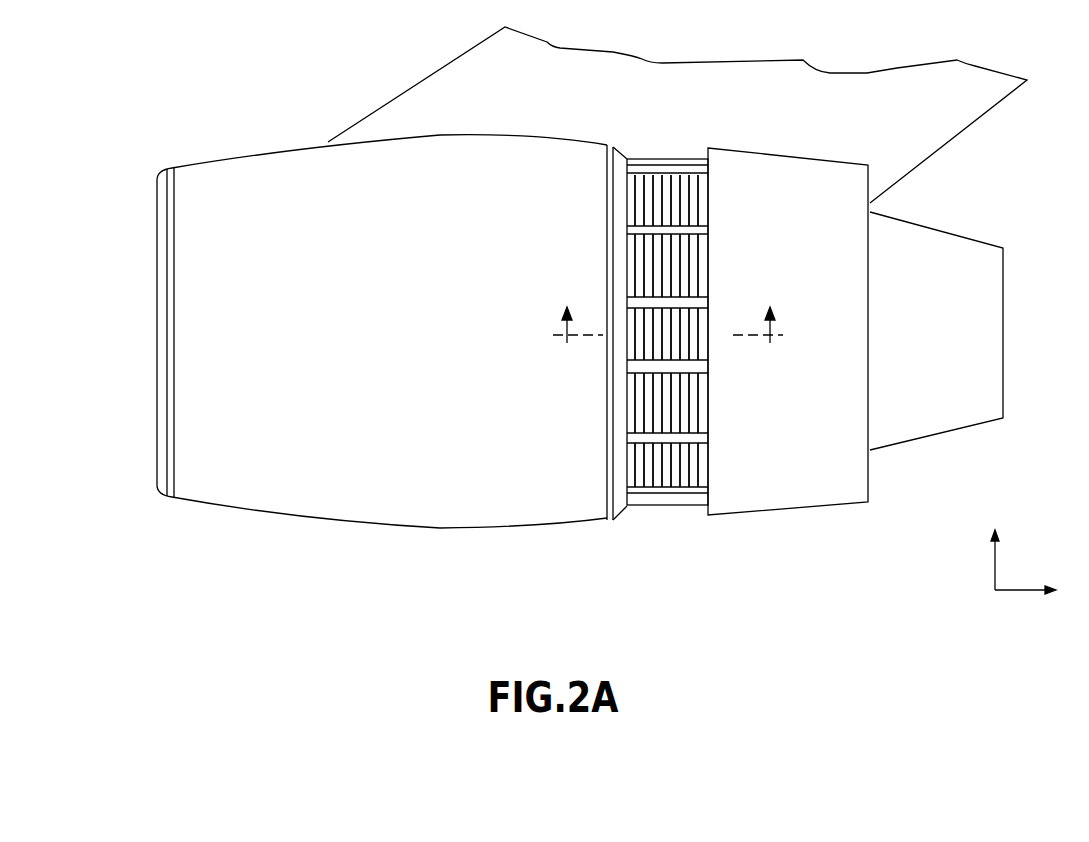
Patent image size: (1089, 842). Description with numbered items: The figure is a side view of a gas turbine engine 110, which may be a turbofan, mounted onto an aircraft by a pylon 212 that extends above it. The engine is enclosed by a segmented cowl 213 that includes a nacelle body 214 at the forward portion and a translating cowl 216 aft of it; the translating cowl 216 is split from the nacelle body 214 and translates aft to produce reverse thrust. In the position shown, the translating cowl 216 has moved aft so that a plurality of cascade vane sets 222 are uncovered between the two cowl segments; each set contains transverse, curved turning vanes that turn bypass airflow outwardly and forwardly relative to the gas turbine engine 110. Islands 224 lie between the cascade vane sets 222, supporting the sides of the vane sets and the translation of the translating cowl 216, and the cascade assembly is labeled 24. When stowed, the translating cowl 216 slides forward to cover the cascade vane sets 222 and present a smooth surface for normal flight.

The gas turbine engine 110 is at (275, 94).
The thrust reverser cascade 24 is at (665, 158).
The pylon 212 is at (781, 122).
The islands 224 is at (677, 230).
The cascade vane sets 222 is at (649, 402).
The segmented cowl 213 is at (626, 513).
The nacelle body 214 is at (500, 530).
The translating cowl 216 is at (763, 510).